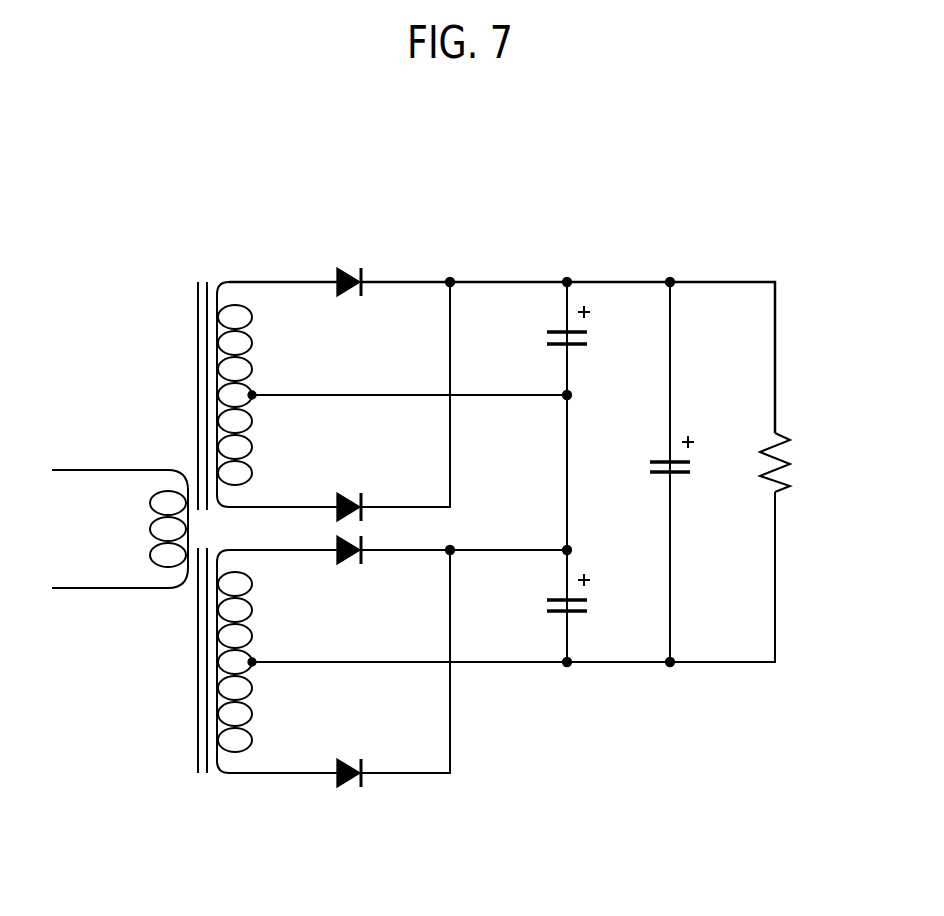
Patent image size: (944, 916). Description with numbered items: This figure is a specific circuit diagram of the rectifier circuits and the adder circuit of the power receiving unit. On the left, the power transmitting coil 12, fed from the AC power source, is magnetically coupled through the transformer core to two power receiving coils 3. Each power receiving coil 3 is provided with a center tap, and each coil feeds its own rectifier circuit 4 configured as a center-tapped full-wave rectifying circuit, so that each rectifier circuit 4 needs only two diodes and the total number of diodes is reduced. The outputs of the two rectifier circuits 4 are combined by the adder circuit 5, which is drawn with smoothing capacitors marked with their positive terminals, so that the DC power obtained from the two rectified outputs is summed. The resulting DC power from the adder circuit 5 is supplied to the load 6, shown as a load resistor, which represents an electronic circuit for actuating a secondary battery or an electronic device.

The power receiving coil 3 is at (224, 282).
The rectifier circuit 4 is at (362, 262).
The adder circuit 5 is at (702, 261).
The load 6 is at (788, 465).
The power transmitting coil 12 is at (177, 590).